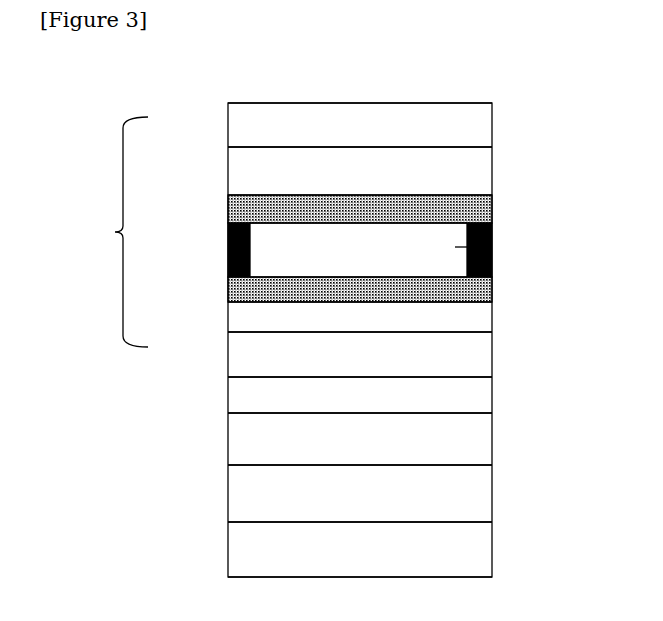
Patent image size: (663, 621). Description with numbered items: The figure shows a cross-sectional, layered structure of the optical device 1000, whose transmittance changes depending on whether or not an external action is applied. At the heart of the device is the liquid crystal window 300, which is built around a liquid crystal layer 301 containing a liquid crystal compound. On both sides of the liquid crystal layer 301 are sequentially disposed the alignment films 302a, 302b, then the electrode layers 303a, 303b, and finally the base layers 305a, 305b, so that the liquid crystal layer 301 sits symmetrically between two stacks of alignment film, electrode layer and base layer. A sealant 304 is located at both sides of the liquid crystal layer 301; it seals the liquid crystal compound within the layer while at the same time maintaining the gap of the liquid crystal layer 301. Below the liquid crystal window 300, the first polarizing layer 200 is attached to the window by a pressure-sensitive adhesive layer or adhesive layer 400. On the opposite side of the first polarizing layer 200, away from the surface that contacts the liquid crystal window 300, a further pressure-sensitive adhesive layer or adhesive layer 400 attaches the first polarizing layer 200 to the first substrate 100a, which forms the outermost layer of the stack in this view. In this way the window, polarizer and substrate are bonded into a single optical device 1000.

The optical device 1000 is at (191, 81).
The first substrate 100a is at (228, 565).
The first polarizing layer 200 is at (228, 432).
The liquid crystal window 300 is at (115, 232).
The liquid crystal layer 301 is at (493, 236).
The alignment film 302a is at (493, 287).
The alignment film 302b is at (493, 212).
The electrode layer 303a is at (493, 320).
The electrode layer 303b is at (493, 175).
The sealant 304 is at (226, 244).
The base layer 305a is at (493, 355).
The base layer 305b is at (493, 122).
The pressure-sensitive adhesive layer or adhesive layer 400 is at (493, 402).